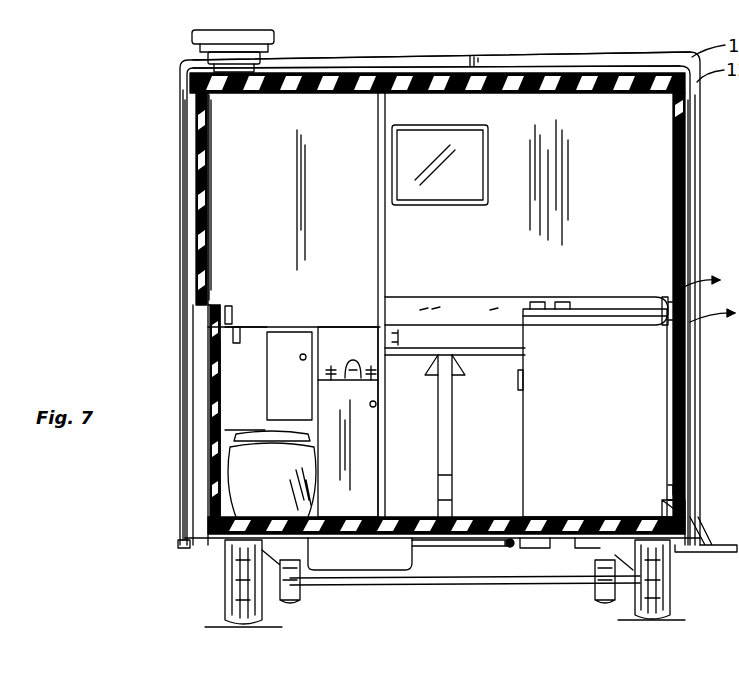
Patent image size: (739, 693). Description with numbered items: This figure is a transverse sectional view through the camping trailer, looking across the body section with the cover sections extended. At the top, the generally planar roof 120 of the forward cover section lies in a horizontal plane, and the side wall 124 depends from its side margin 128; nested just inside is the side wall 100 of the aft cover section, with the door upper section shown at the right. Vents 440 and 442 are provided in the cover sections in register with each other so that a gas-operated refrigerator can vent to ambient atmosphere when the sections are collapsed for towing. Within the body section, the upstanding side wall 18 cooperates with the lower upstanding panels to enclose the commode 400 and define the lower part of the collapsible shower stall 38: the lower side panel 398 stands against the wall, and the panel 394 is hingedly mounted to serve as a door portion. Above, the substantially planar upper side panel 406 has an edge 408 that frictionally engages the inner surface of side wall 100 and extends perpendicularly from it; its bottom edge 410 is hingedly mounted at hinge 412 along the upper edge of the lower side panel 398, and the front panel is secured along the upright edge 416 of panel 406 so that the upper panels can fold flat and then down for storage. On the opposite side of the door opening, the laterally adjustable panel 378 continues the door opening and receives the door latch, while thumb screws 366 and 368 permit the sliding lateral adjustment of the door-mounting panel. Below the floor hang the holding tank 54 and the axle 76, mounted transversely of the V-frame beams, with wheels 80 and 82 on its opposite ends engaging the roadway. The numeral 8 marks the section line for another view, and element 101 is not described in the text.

The side margin of roof 128 is at (178, 63).
The side wall of forward cover section 124 is at (185, 119).
The roof 120 is at (470, 62).
The side wall of aft cover section 100 is at (198, 200).
The vent 440 is at (218, 36).
The vent 442 is at (258, 60).
The right inner panel 101 is at (680, 143).
The edge of side panel 408 is at (204, 150).
The side panel 406 is at (270, 200).
The upright edge of side panel 416 is at (378, 137).
The shower stall 38 is at (398, 296).
The panel 394 is at (385, 440).
The bottom edge of side panel 410 is at (330, 327).
The hinge 412 is at (233, 305).
The side wall of body section 18 is at (216, 382).
The panel 398 is at (246, 378).
The commode 400 is at (272, 474).
The laterally adjustable panel 378 is at (675, 398).
The thumb screw 366 is at (660, 332).
The thumb screw 368 is at (668, 487).
The section line FIG. 8 is at (708, 301).
The holding tank 54 is at (454, 554).
The axle 76 is at (473, 585).
The wheel 82 is at (238, 581).
The wheel 80 is at (660, 590).